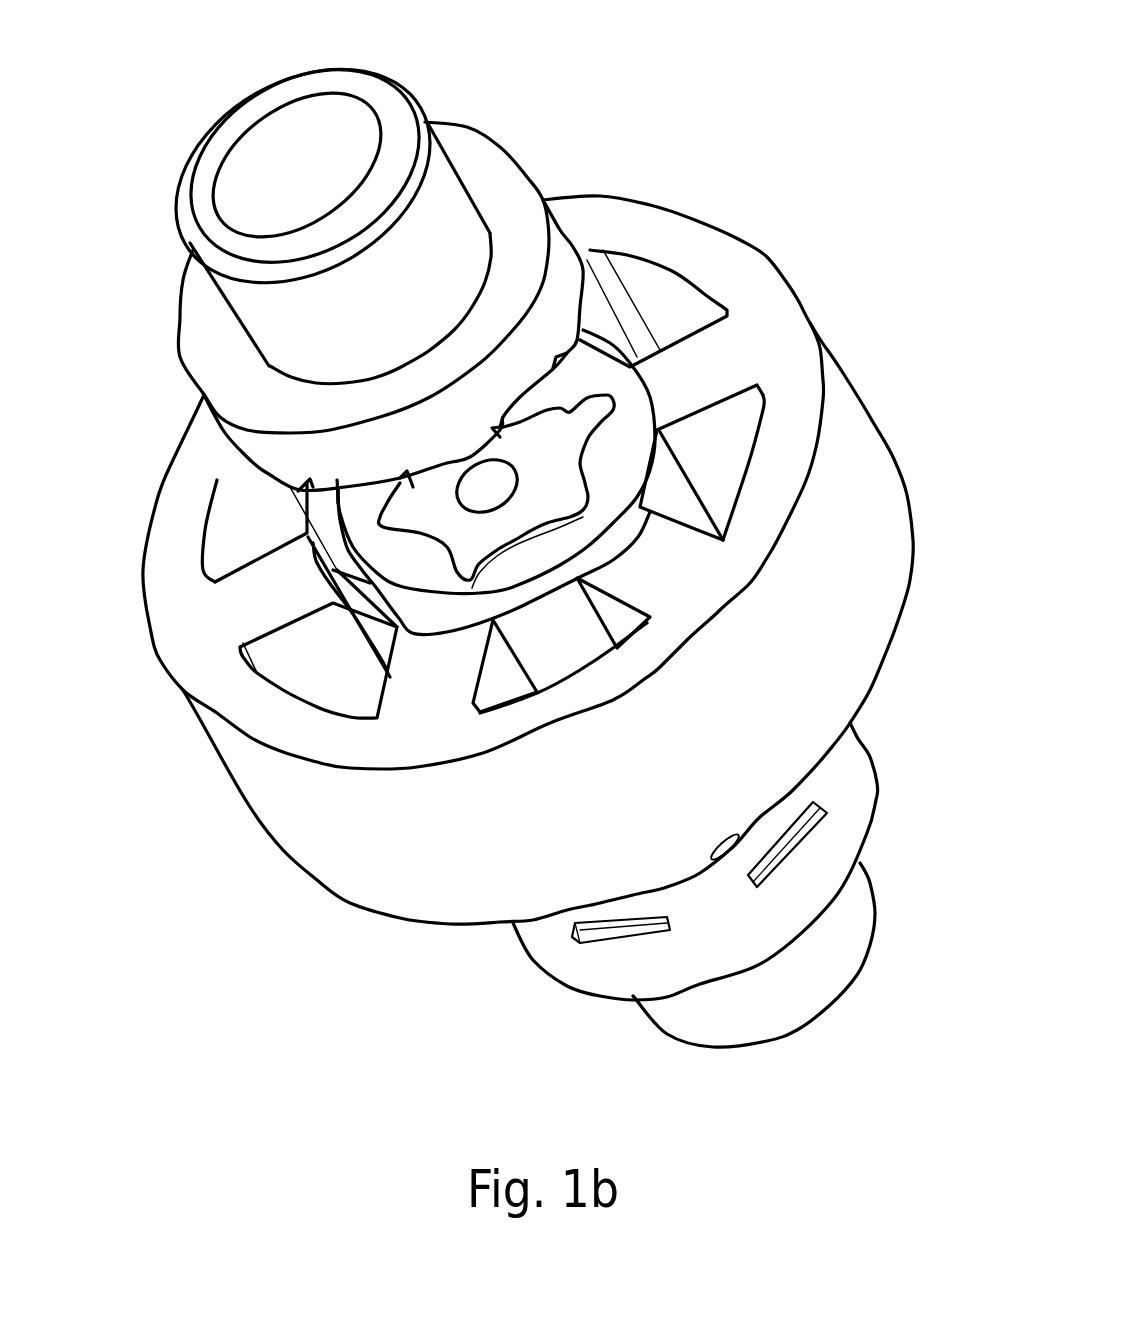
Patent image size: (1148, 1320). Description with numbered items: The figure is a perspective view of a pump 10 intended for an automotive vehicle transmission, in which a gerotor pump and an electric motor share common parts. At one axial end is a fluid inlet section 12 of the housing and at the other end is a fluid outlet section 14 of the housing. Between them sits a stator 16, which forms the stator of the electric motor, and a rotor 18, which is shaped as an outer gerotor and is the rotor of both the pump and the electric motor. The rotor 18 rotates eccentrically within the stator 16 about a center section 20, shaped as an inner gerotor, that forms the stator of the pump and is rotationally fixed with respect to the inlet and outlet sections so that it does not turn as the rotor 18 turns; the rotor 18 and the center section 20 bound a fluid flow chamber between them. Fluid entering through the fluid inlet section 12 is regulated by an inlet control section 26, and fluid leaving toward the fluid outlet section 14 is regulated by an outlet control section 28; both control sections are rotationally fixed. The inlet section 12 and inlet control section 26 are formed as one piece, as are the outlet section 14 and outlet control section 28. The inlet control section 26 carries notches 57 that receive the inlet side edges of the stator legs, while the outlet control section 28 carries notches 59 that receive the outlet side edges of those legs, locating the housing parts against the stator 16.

The pump 10 is at (720, 124).
The fluid inlet section 12 is at (245, 313).
The fluid outlet section 14 is at (694, 1018).
The stator 16 is at (371, 868).
The rotor 18 is at (669, 480).
The center section 20 is at (577, 420).
The inlet control section 26 is at (256, 450).
The outlet control section 28 is at (597, 968).
The notches 57 is at (490, 396).
The notches 59 is at (760, 907).